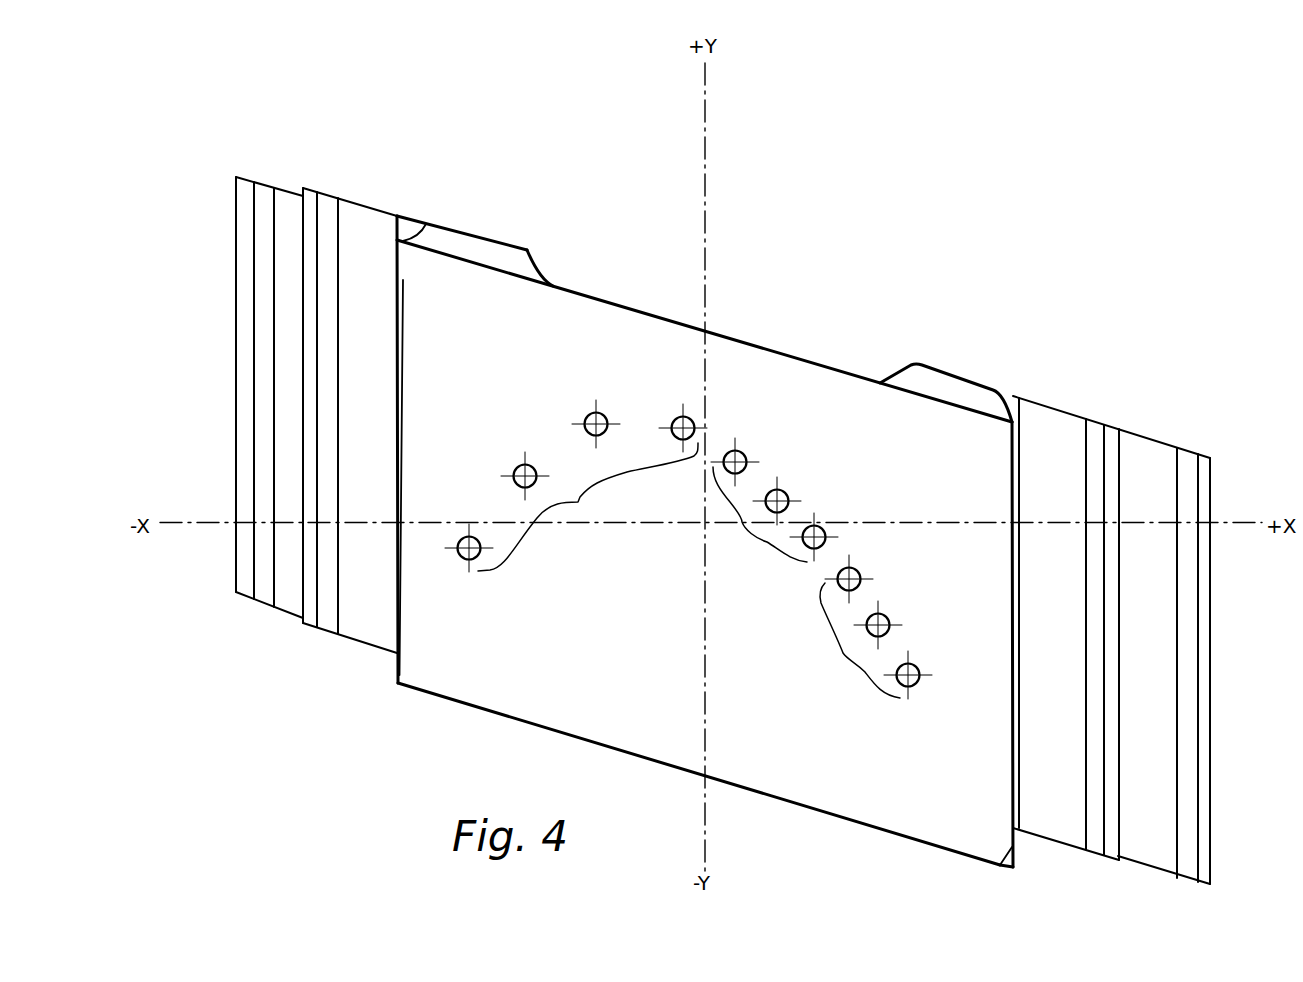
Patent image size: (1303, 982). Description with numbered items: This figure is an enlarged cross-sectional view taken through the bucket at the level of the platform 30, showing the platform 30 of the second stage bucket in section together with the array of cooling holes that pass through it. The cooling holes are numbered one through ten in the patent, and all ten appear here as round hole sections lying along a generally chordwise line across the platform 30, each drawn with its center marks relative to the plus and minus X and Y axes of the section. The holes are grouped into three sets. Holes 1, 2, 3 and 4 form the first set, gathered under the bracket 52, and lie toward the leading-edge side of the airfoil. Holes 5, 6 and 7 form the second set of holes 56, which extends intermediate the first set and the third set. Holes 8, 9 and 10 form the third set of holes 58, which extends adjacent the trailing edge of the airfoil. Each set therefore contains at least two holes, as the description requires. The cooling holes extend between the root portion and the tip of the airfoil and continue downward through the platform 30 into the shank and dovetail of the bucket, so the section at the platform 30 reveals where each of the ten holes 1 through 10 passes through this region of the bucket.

The cooling hole 1 is at (469, 548).
The cooling hole 2 is at (525, 476).
The cooling hole 3 is at (596, 424).
The cooling hole 4 is at (683, 428).
The cooling hole 5 is at (735, 462).
The cooling hole 6 is at (777, 501).
The cooling hole 7 is at (814, 537).
The cooling hole 8 is at (849, 579).
The cooling hole 9 is at (878, 625).
The cooling hole 10 is at (908, 675).
The platform 30 is at (541, 674).
The first hole group 52 is at (588, 507).
The second set of holes 56 is at (760, 514).
The third set of holes 58 is at (854, 640).